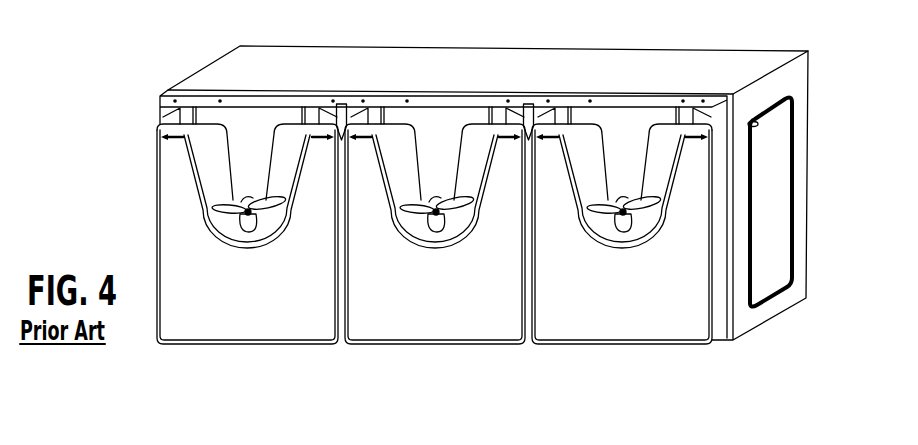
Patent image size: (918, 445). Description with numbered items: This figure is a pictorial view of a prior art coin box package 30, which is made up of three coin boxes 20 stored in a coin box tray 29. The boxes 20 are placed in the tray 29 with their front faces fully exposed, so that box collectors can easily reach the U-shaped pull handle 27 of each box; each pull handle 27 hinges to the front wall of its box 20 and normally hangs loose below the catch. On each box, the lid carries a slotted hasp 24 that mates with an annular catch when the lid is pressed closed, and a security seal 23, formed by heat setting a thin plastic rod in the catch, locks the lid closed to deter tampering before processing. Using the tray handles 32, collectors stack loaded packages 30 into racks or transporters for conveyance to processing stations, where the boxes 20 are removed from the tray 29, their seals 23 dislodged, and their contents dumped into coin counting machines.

The coin box 20 is at (257, 322).
The security seal 23 is at (213, 213).
The slotted hasp 24 is at (242, 172).
The U-shaped pull handle 27 is at (455, 248).
The coin box tray 29 is at (690, 70).
The coin box package 30 is at (138, 120).
The tray handle 32 is at (787, 97).